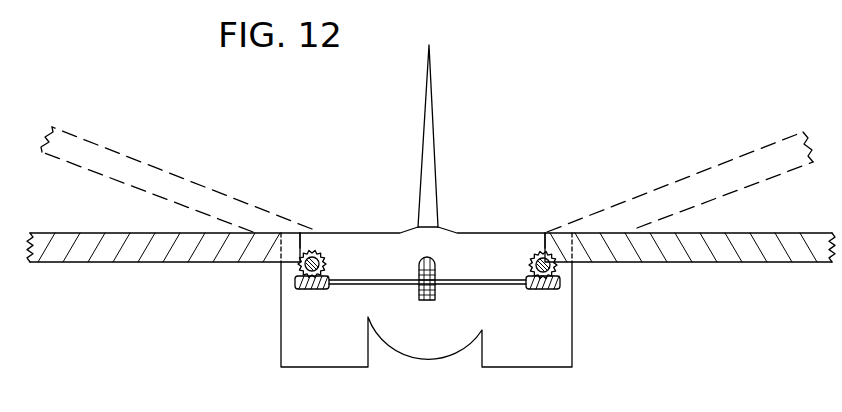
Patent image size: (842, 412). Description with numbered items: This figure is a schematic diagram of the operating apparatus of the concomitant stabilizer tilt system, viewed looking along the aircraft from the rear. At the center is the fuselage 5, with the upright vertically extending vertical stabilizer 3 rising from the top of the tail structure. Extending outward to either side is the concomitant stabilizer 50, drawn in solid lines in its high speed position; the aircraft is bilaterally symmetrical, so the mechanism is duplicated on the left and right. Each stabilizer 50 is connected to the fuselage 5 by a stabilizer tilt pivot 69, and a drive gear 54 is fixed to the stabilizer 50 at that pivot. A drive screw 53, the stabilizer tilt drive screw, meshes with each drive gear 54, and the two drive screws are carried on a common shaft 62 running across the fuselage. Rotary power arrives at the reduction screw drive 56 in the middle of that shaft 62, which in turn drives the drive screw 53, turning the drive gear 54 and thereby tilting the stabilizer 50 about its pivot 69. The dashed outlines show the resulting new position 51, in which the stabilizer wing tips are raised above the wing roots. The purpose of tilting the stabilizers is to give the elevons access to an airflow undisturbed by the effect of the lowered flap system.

The vertical stabilizer 3 is at (431, 78).
The fuselage 5 is at (423, 362).
The stabilizer 50 is at (108, 262).
The new position 51 is at (113, 148).
The drive screw 53 is at (303, 290).
The drive gear 54 is at (300, 268).
The reduction screw drive 56 is at (438, 300).
The shaft 62 is at (490, 285).
The stabilizer tilt pivot 69 is at (330, 257).